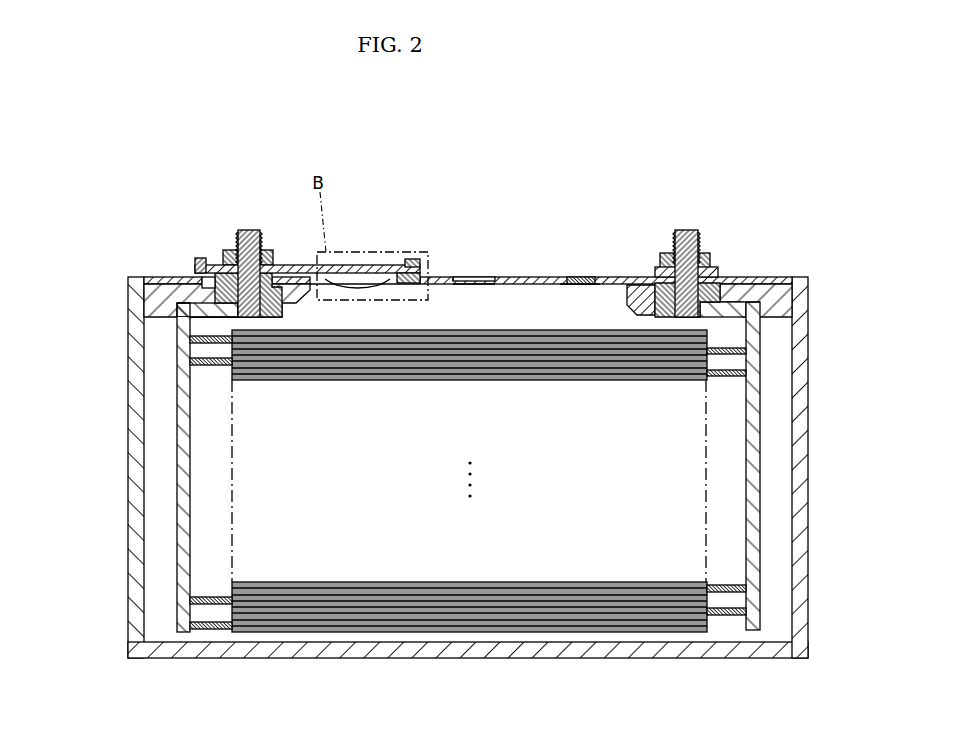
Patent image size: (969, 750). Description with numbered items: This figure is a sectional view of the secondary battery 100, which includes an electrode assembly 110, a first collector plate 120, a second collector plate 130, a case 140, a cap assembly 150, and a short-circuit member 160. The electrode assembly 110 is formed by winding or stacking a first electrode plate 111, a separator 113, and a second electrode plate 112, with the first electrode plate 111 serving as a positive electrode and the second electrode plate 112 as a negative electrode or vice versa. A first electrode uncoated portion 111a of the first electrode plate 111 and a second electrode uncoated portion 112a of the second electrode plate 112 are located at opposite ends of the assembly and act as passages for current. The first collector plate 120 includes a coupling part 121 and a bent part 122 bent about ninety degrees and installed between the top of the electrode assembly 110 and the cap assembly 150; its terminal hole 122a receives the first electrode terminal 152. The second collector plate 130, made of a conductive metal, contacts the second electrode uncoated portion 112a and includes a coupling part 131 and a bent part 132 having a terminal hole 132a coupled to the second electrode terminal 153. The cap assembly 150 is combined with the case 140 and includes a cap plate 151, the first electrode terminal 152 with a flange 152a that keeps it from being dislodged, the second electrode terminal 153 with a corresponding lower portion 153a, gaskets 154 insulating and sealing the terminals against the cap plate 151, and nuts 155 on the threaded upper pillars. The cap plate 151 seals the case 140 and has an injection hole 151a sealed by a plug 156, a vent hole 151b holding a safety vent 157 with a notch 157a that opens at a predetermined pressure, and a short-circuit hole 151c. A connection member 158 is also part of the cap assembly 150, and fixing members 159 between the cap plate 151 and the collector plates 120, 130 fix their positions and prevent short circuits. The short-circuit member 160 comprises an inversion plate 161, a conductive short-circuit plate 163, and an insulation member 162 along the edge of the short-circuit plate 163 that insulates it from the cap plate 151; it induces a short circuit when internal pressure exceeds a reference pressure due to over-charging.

The secondary battery 100 is at (769, 150).
The electrode assembly 110 is at (469, 521).
The first electrode plate 111 is at (632, 630).
The first electrode uncoated portion 111a is at (728, 615).
The second electrode plate 112 is at (346, 600).
The second electrode uncoated portion 112a is at (211, 624).
The separator 113 is at (482, 632).
The first collector plate 120 is at (761, 418).
The coupling part 121 is at (753, 482).
The bent part 122 is at (738, 303).
The terminal hole 122a is at (697, 318).
The second collector plate 130 is at (177, 418).
The coupling part 131 is at (186, 504).
The bent part 132 is at (197, 307).
The terminal hole 132a is at (236, 320).
The case 140 is at (796, 372).
The cap assembly 150 is at (541, 195).
The cap plate 151 is at (541, 277).
The injection hole 151a is at (577, 287).
The vent hole 151b is at (463, 285).
The short-circuit hole 151c is at (385, 284).
The first electrode terminal 152 is at (686, 230).
The flange 152a is at (655, 295).
The second electrode terminal 153 is at (243, 229).
The second terminal flange 153a is at (290, 297).
The gasket 154 is at (200, 258).
The nut 155 is at (266, 250).
The plug 156 is at (582, 277).
The safety vent 157 is at (492, 277).
The notch 157a is at (457, 277).
The connection member 158 is at (716, 268).
The fixing member 159 is at (150, 296).
The short-circuit member 160 is at (394, 251).
The inversion plate 161 is at (352, 281).
The insulation member 162 is at (413, 259).
The short-circuit plate 163 is at (304, 265).